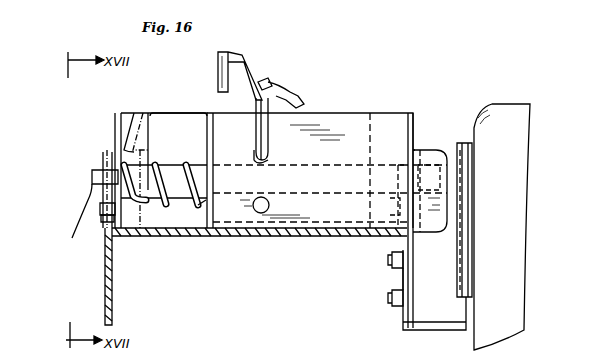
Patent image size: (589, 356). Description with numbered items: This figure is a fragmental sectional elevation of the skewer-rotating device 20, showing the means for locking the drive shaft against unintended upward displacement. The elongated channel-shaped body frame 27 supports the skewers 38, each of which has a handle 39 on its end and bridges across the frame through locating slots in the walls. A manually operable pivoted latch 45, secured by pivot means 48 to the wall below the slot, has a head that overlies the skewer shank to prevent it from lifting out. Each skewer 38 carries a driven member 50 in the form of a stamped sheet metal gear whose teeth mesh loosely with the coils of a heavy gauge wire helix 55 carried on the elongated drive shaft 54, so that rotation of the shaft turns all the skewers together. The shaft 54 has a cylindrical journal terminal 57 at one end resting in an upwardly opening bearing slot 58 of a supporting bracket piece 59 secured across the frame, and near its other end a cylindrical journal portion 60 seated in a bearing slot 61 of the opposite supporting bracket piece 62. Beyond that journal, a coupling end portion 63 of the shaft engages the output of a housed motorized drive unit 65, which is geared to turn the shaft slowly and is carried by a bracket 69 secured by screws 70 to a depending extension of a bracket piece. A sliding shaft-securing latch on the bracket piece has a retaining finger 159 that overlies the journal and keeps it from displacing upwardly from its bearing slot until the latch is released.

The device 20 is at (398, 108).
The body frame 27 is at (206, 236).
The skewer 38 is at (256, 129).
The handle 39 is at (268, 152).
The pivoted latch 45 is at (218, 88).
The pivot means 48 is at (269, 205).
The driven member 50 is at (284, 92).
The drive shaft 54 is at (172, 165).
The helix 55 is at (200, 205).
The journal terminal 57 is at (74, 217).
The bearing slot 58 is at (131, 113).
The supporting bracket piece 59 is at (110, 115).
The journal portion 60 is at (388, 207).
The bearing slot 61 is at (414, 112).
The supporting bracket piece 62 is at (400, 148).
The coupling end portion 63 is at (466, 177).
The drive unit 65 is at (506, 104).
The bracket 69 is at (438, 330).
The screws 70 is at (388, 258).
The retaining finger 159 is at (105, 160).